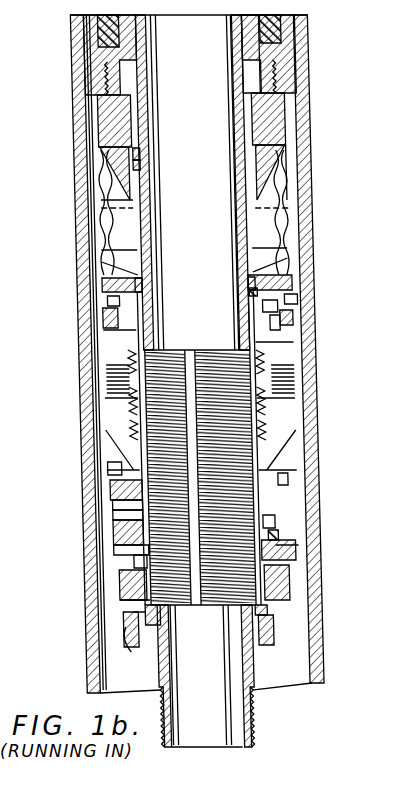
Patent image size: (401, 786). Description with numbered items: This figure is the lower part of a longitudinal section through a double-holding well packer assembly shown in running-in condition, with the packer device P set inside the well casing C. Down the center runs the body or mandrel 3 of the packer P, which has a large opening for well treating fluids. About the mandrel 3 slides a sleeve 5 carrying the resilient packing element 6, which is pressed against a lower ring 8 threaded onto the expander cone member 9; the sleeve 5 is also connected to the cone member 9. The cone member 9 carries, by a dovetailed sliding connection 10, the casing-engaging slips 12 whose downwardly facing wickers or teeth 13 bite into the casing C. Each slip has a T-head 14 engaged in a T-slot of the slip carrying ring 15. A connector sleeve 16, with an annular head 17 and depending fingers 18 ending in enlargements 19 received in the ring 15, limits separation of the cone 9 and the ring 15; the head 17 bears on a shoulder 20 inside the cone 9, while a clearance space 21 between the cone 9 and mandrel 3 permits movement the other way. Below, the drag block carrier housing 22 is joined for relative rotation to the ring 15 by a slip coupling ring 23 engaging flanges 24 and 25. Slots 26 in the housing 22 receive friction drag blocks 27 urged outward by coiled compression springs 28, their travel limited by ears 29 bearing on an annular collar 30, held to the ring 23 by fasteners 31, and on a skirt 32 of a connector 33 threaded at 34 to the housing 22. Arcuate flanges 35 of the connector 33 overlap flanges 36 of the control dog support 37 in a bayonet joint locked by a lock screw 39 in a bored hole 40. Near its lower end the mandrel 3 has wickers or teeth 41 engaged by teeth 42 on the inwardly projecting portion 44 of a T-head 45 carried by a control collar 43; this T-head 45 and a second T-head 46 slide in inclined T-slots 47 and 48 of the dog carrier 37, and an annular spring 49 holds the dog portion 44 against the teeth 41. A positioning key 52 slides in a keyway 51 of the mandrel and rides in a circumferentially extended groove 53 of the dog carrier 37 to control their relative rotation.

The packer device P is at (88, 42).
The well casing C is at (300, 215).
The body or mandrel 3 is at (150, 108).
The sleeve 5 is at (248, 52).
The resilient packing element 6 is at (267, 22).
The lower ring 8 is at (278, 48).
The expander cone member 9 is at (272, 97).
The dovetailed sliding connection 10 is at (283, 157).
The casing-engaging slips 12 is at (100, 172).
The wickers or teeth 13 is at (100, 208).
The T-head 14 is at (107, 270).
The slip carrying ring 15 is at (285, 282).
The connector sleeve 16 is at (252, 145).
The annular head 17 is at (138, 155).
The fingers 18 is at (103, 205).
The enlargements 19 is at (250, 288).
The shoulder 20 is at (138, 166).
The clearance space 21 is at (243, 132).
The drag block carrier housing 22 is at (258, 343).
The slip coupling ring 23 is at (290, 318).
The flange 24 is at (250, 291).
The flange 25 is at (265, 310).
The slots 26 is at (133, 452).
The friction drag blocks 27 is at (100, 375).
The coiled compression springs 28 is at (125, 356).
The ears 29 is at (270, 321).
The annular collar 30 is at (103, 318).
The fasteners 31 is at (105, 300).
The skirt 32 is at (108, 483).
The connector 33 is at (110, 532).
The threaded connection 34 is at (110, 517).
The inwardly projecting arcuate flanges 35 is at (128, 578).
The outwardly projecting arcuate flanges or ribs 36 is at (130, 563).
The control dog support 37 is at (120, 600).
The lock screw 39 is at (270, 537).
The bored hole 40 is at (280, 545).
The wickers or teeth 41 is at (150, 417).
The wickers or teeth 42 is at (170, 603).
The control collar 43 is at (275, 638).
The inwardly projecting portion 44 is at (150, 625).
The T-head 45 is at (130, 615).
The second T-head 46 is at (290, 602).
The T-slot 47 is at (125, 590).
The T-slot 48 is at (262, 583).
The annular spring 49 is at (128, 643).
The keyway 51 is at (200, 580).
The positioning key 52 is at (130, 545).
The circumferentially extended groove 53 is at (112, 505).